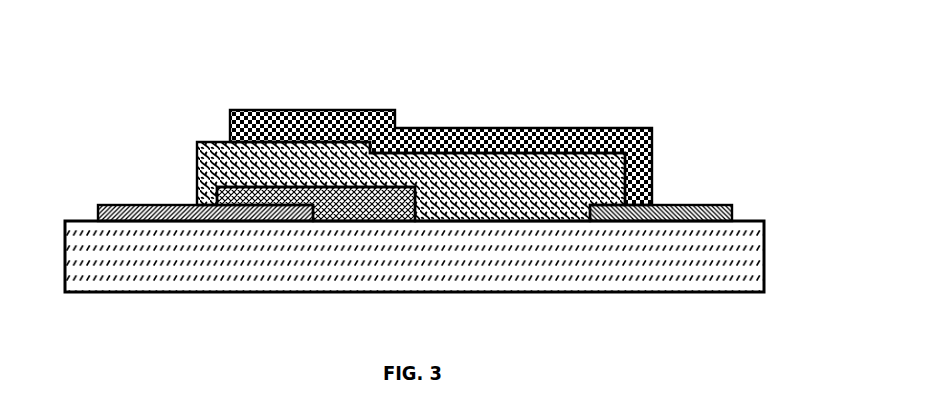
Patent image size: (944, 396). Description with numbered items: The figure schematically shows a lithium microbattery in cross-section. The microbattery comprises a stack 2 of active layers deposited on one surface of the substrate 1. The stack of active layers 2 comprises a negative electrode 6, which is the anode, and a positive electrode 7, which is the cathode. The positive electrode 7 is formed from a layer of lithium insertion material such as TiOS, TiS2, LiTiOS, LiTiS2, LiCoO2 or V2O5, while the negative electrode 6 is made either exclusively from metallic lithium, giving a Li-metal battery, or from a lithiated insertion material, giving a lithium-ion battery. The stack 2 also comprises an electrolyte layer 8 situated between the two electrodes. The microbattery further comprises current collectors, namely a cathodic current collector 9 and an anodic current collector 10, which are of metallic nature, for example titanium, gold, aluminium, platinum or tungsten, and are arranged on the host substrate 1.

The substrate 1 is at (587, 270).
The stack of active layers 2 is at (686, 110).
The negative electrode 6 is at (323, 130).
The positive electrode 7 is at (257, 185).
The electrolyte layer 8 is at (493, 188).
The cathodic current collector 9 is at (150, 205).
The anodic current collector 10 is at (698, 207).